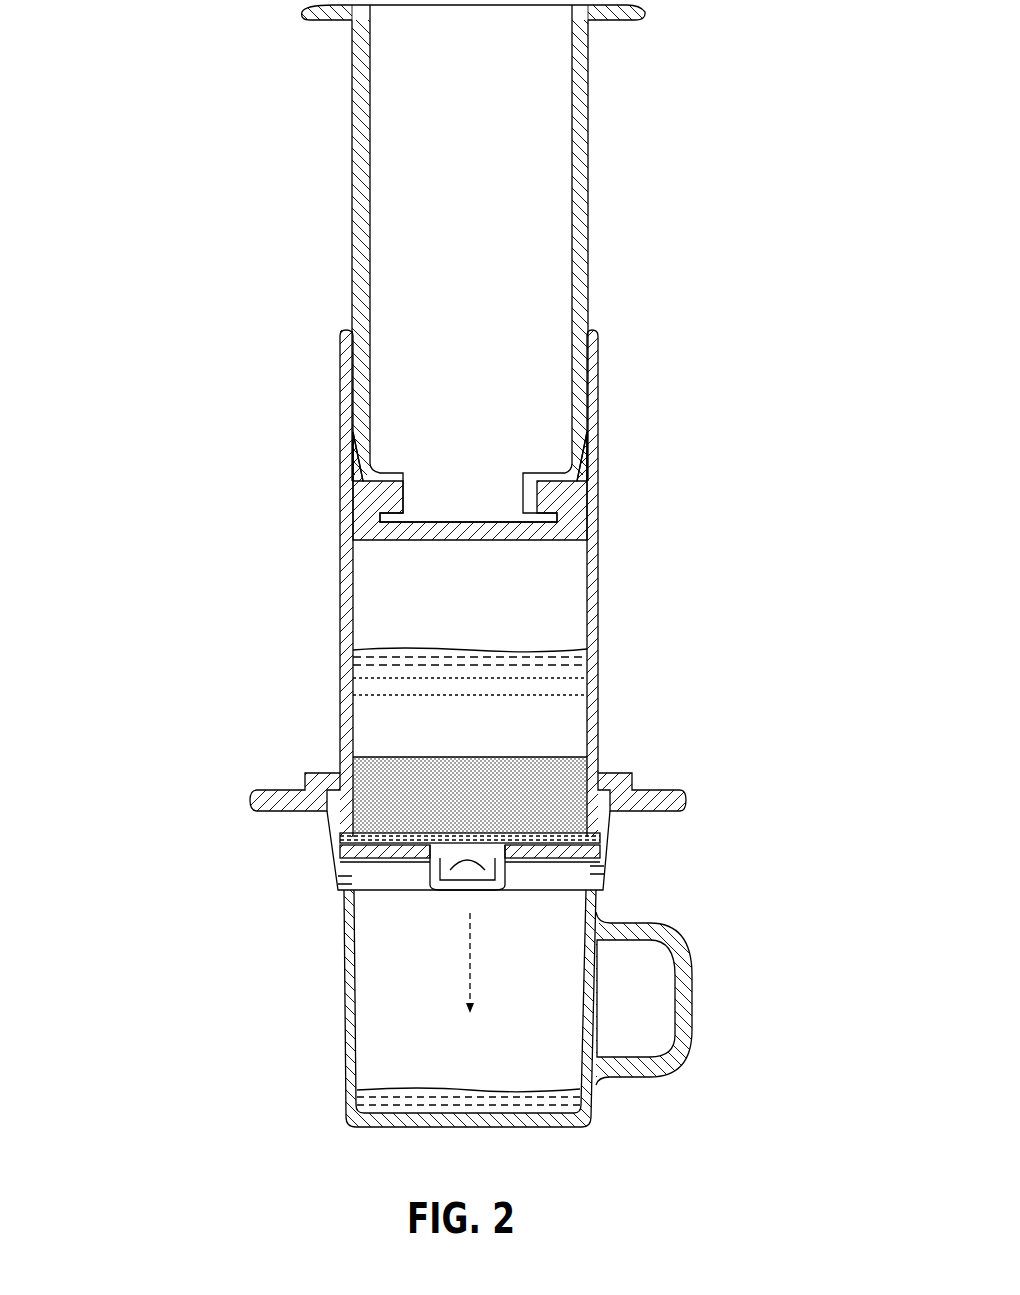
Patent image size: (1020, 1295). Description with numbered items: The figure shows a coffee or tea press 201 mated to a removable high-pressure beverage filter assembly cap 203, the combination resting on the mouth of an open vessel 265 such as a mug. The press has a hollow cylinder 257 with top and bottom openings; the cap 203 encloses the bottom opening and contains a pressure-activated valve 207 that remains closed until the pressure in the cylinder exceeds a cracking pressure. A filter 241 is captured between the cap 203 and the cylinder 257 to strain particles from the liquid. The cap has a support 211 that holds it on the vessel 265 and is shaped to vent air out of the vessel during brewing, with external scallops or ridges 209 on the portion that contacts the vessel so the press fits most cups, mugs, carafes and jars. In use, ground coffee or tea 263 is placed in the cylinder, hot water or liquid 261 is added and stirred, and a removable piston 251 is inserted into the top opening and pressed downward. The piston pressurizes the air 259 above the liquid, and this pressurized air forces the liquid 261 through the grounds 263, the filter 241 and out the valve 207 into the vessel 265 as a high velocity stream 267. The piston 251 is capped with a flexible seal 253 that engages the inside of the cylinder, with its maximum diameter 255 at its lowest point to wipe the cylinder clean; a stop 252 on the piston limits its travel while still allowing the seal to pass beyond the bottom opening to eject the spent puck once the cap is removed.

The coffee or tea press 201 is at (170, 422).
The high-pressure beverage filter assembly cap 203 is at (300, 858).
The pressure-activated valve 207 is at (343, 900).
The scallops or ridges 209 is at (340, 877).
The support 211 is at (610, 868).
The filter 241 is at (328, 843).
The piston 251 is at (588, 207).
The stop 252 is at (303, 18).
The flexible seal 253 is at (354, 483).
The maximum diameter 255 is at (337, 535).
The hollow cylinder 257 is at (598, 548).
The air 259 is at (558, 620).
The liquid 261 is at (558, 703).
The ground coffee or tea 263 is at (355, 770).
The open vessel 265 is at (590, 978).
The high velocity stream 267 is at (458, 960).